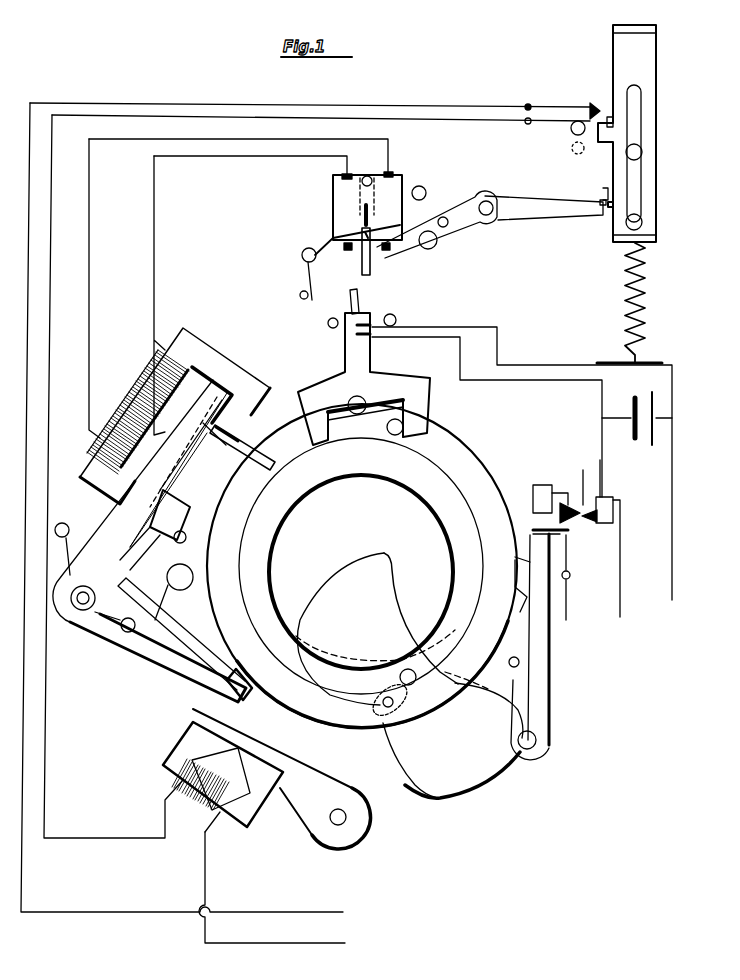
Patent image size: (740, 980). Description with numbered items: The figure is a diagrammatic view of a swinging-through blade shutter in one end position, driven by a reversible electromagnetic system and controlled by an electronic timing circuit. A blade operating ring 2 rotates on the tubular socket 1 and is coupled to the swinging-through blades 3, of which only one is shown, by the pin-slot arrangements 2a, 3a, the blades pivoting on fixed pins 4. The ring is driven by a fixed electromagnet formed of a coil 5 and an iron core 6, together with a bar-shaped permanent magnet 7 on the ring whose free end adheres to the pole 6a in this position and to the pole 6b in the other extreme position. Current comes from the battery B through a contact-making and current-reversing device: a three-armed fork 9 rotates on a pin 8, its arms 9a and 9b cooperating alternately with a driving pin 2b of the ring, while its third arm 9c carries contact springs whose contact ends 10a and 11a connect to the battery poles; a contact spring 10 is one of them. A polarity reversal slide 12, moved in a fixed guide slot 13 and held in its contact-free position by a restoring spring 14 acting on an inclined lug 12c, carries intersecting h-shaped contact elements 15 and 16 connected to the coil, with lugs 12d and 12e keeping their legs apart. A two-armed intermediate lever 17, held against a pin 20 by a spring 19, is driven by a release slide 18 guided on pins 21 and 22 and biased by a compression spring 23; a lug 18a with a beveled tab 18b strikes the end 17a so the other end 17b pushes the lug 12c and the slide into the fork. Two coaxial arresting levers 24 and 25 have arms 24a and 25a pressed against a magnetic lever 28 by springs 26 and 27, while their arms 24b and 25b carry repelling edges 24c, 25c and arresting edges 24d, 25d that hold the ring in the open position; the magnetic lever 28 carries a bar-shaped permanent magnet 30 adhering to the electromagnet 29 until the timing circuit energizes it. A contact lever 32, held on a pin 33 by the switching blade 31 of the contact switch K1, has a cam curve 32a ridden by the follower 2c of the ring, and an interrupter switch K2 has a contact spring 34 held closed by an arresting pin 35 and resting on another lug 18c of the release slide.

The tubular socket 1 is at (440, 505).
The blade operating ring 2 is at (475, 462).
The pin-slot arrangement 2a is at (380, 720).
The driving pin 2b is at (392, 435).
The follower 2c is at (517, 620).
The swinging-through blade 3 is at (385, 625).
The pin-slot arrangement 3a is at (395, 708).
The pin 4 is at (414, 672).
The coil 5 is at (147, 378).
The iron core 6 is at (200, 352).
The pole 6a is at (255, 412).
The pole 6b is at (182, 516).
The bar-shaped permanent magnet 7 is at (248, 450).
The pin 8 is at (366, 402).
The three-armed fork 9 is at (335, 387).
The arm 9a is at (313, 432).
The arm 9b is at (420, 418).
The third arm 9c is at (345, 344).
The contact spring 10 is at (350, 298).
The contact end 10a is at (366, 324).
The contact end 11a is at (372, 332).
The polarity reversal slide 12 is at (403, 198).
The inclined lug 12c is at (364, 212).
The lug 12d is at (347, 252).
The lug 12e is at (392, 250).
The guide slot 13 is at (372, 272).
The restoring spring 14 is at (322, 243).
The contact element 15 is at (344, 178).
The contact element 16 is at (390, 175).
The intermediate lever 17 is at (527, 215).
The end 17a is at (598, 214).
The end 17b is at (377, 238).
The release slide 18 is at (625, 45).
The lug 18a is at (604, 192).
The tab 18b is at (600, 201).
The lug 18c is at (608, 120).
The spring 19 is at (460, 195).
The pin 20 is at (438, 243).
The pin 21 is at (642, 152).
The pin 22 is at (642, 221).
The compression spring 23 is at (642, 282).
The arresting lever 24 is at (80, 628).
The arm 24a is at (200, 680).
The arm 24b is at (228, 394).
The repelling edge 24c is at (212, 424).
The arresting edge 24d is at (216, 438).
The arresting lever 25 is at (130, 592).
The arm 25a is at (238, 698).
The arm 25b is at (148, 535).
The repelling edge 25c is at (188, 470).
The arresting edge 25d is at (205, 455).
The spring 26 is at (70, 537).
The spring 27 is at (176, 612).
The magnetic lever 28 is at (312, 818).
The electromagnet 29 is at (248, 815).
The bar-shaped permanent magnet 30 is at (236, 748).
The switching blade 31 is at (568, 549).
The contact lever 32 is at (553, 680).
The cam curve 32a is at (528, 559).
The pin 33 is at (512, 666).
The contact spring 34 is at (532, 124).
The arresting pin 35 is at (572, 134).
The battery B is at (643, 405).
The contact switch K1 is at (573, 485).
The interrupter switch K2 is at (590, 108).